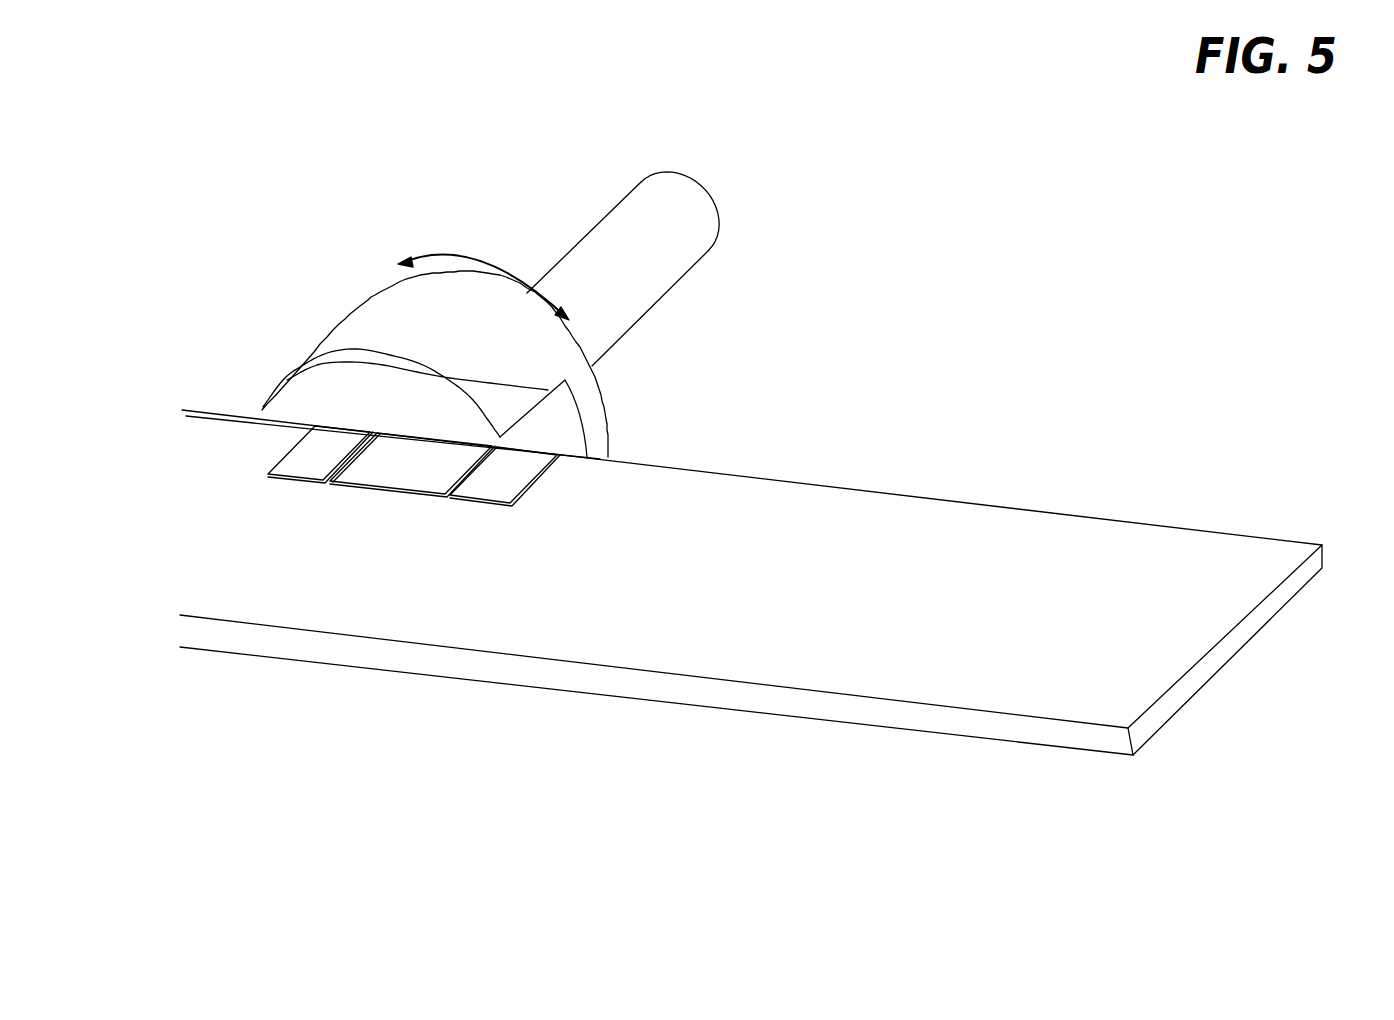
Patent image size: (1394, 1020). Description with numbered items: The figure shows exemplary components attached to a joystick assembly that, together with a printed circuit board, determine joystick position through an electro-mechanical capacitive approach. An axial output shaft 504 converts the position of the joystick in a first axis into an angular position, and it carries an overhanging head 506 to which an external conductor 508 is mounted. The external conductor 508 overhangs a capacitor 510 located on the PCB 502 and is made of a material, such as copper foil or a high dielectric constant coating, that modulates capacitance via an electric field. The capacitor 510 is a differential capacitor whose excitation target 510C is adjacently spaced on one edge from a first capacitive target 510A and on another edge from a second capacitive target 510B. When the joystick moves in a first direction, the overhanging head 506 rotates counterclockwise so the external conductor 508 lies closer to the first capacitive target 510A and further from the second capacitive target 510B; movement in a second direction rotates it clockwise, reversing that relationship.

The PCB 502 is at (1312, 577).
The axial output shaft 504 is at (612, 297).
The overhanging head 506 is at (390, 308).
The external conductor 508 is at (343, 402).
The capacitor 510 is at (356, 487).
The first capacitive target 510A is at (303, 477).
The second capacitive target 510B is at (499, 497).
The excitation target 510C is at (398, 480).